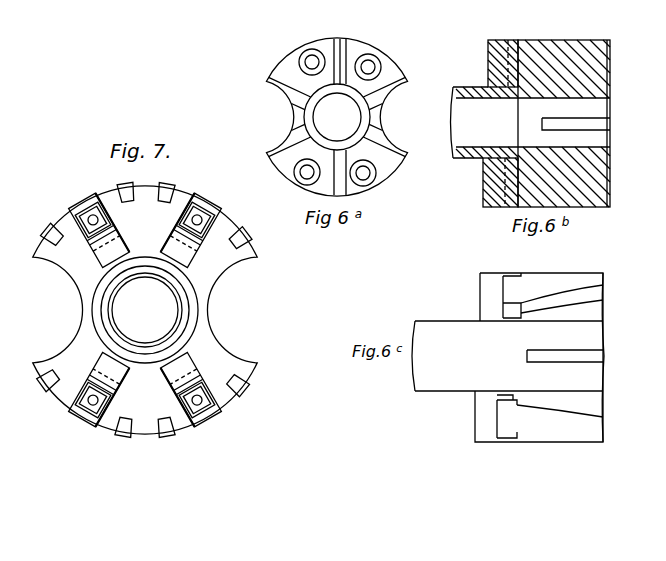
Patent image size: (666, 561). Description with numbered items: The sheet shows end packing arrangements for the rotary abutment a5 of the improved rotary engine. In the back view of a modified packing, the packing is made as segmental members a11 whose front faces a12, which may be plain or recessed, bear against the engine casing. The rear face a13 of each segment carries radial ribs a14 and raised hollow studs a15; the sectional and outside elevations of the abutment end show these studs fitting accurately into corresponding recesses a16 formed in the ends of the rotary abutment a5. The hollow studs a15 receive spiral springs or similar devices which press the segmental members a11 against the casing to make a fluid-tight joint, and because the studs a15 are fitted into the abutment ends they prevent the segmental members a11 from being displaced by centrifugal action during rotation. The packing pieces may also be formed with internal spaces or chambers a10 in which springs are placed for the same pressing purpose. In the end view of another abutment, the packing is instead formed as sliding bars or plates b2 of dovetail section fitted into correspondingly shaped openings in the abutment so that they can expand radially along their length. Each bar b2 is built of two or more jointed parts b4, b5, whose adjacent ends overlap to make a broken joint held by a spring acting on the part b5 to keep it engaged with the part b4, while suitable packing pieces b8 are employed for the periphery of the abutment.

In FIG. 7, the sliding bars or plates b2 is at (68, 207).
In FIG. 7, the part of packing bar b4 is at (205, 250).
In FIG. 7, the part of packing bar b5 is at (173, 240).
In FIG. 7, the peripheral packing pieces b8 is at (121, 185).
In FIG. 7, the rotary abutment a5 is at (180, 190).
In FIG. 6A, the internal spaces or chambers a10 is at (373, 152).
In FIG. 6C, the internal spaces or chambers a10 is at (603, 300).
In FIG. 6A, the segmental members a11 is at (288, 178).
In FIG. 6B, the segmental members a11 is at (493, 192).
In FIG. 6C, the segmental members a11 is at (508, 397).
In FIG. 6A, the front faces a12 is at (265, 75).
In FIG. 6B, the front faces a12 is at (483, 175).
In FIG. 6C, the front faces a12 is at (476, 410).
In FIG. 6A, the rear face a13 is at (368, 47).
In FIG. 6B, the rear face a13 is at (507, 208).
In FIG. 6A, the radial ribs a14 is at (347, 48).
In FIG. 6C, the radial ribs a14 is at (603, 417).
In FIG. 6A, the raised hollow studs a15 is at (310, 52).
In FIG. 6C, the recesses a16 is at (603, 285).